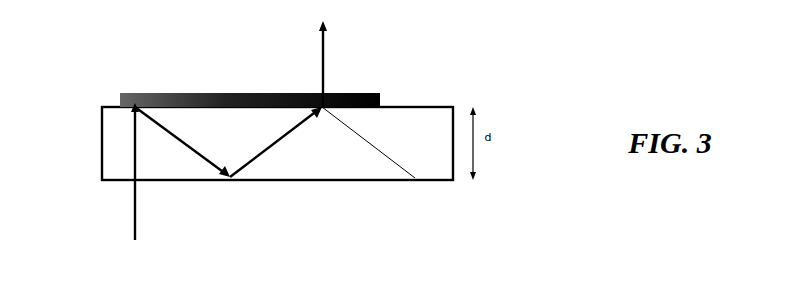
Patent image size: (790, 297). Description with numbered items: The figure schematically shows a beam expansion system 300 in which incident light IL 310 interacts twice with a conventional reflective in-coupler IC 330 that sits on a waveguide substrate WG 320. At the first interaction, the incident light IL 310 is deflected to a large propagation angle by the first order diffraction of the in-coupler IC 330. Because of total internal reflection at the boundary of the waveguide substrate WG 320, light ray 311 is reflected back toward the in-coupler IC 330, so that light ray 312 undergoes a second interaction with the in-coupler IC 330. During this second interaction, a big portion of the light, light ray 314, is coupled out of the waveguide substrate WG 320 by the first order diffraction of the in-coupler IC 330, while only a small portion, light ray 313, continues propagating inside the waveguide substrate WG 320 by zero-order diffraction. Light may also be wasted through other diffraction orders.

The beam expansion system 300 is at (528, 48).
The incident light IL 310 is at (132, 233).
The light ray 311 is at (160, 124).
The light ray 312 is at (292, 126).
The light ray 313 is at (363, 140).
The light ray 314 is at (323, 78).
The waveguide substrate WG 320 is at (117, 163).
The reflective in-coupler IC 330 is at (117, 93).